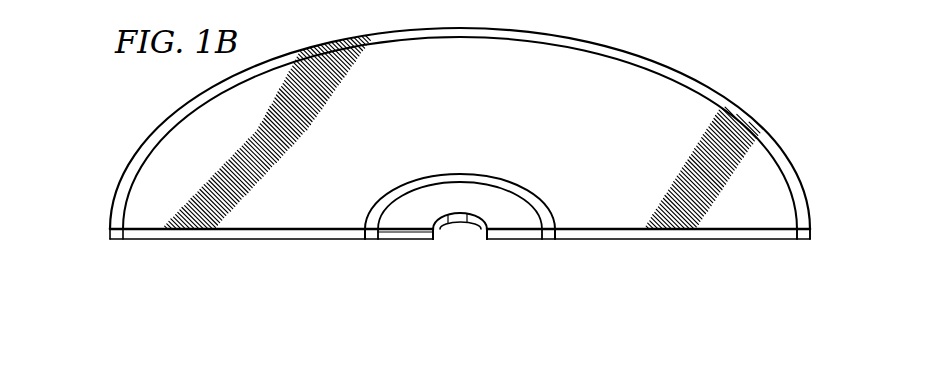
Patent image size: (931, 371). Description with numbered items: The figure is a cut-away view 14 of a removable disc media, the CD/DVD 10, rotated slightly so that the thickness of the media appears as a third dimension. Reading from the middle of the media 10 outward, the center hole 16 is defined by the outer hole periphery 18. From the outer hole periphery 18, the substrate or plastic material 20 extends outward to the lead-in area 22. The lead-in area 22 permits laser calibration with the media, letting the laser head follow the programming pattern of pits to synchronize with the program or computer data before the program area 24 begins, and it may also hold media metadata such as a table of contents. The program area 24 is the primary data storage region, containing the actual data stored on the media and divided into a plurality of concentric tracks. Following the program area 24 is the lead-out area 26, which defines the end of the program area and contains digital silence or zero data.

The CD/DVD 10 is at (733, 48).
The cut-away view 14 is at (139, 126).
The center hole 16 is at (473, 250).
The outer hole periphery 18 is at (450, 225).
The substrate or plastic material 20 is at (408, 225).
The lead-in area 22 is at (546, 232).
The program area 24 is at (300, 219).
The lead-out area 26 is at (805, 238).